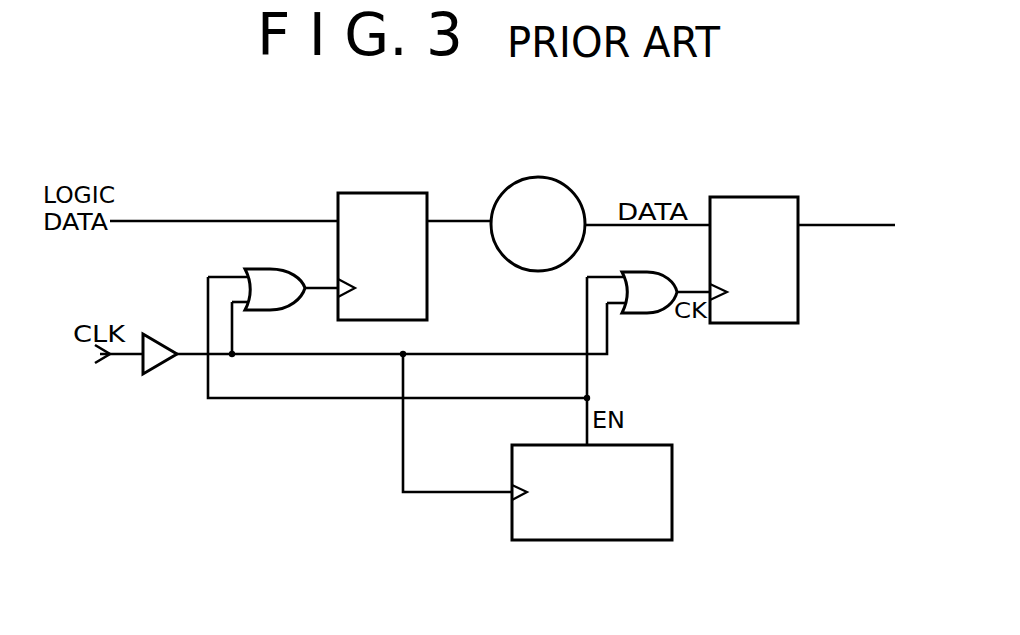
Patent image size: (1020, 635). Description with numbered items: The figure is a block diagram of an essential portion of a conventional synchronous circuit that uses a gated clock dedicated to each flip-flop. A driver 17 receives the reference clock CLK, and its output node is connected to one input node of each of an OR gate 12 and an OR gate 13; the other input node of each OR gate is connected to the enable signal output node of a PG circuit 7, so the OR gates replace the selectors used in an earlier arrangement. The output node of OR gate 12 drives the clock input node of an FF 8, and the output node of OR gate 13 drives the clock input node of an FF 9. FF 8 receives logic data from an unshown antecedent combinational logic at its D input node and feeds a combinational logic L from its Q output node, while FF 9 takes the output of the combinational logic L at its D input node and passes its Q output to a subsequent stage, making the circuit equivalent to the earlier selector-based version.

The PG circuit 7 is at (674, 490).
The FF 8 is at (377, 193).
The FF 9 is at (748, 197).
The combinational logic L is at (565, 178).
The OR gate 12 is at (272, 266).
The OR gate 13 is at (650, 315).
The driver 17 is at (152, 374).